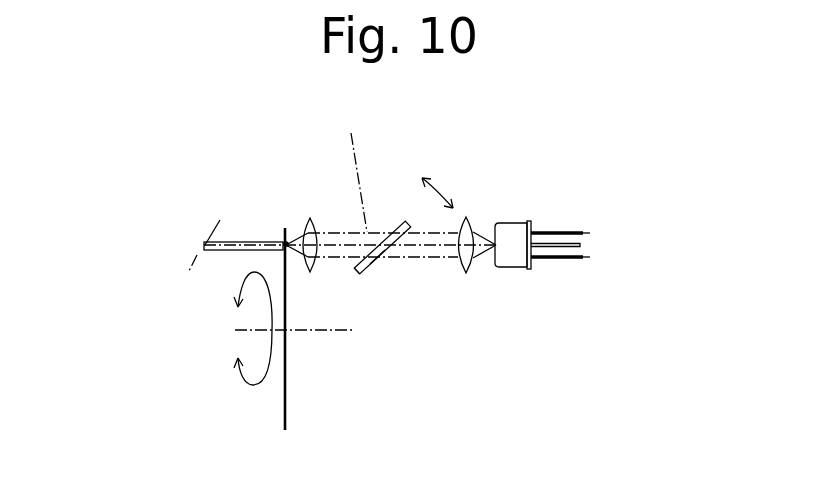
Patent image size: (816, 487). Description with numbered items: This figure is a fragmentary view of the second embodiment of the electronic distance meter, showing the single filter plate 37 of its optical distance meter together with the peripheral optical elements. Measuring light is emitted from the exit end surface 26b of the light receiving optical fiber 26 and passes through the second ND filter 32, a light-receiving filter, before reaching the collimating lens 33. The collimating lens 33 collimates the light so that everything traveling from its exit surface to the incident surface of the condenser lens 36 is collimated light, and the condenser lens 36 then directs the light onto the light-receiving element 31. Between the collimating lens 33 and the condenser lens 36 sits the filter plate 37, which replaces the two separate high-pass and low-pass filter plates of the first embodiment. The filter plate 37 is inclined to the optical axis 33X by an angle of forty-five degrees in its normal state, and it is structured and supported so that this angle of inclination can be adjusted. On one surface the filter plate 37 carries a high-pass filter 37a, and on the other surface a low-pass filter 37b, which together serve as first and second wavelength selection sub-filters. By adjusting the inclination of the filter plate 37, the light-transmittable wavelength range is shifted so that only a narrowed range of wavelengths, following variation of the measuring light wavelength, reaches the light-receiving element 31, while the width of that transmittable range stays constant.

The light receiving optical fiber 26 is at (233, 228).
The exit end surface 26b is at (286, 243).
The light-receiving element 31 is at (521, 222).
The second ND filter 32 is at (286, 388).
The collimating lens 33 is at (309, 222).
The optical axis 33X is at (362, 170).
The condenser lens 36 is at (467, 217).
The filter plate 37 is at (401, 225).
The high-pass filter 37a is at (356, 272).
The low-pass filter 37b is at (379, 264).